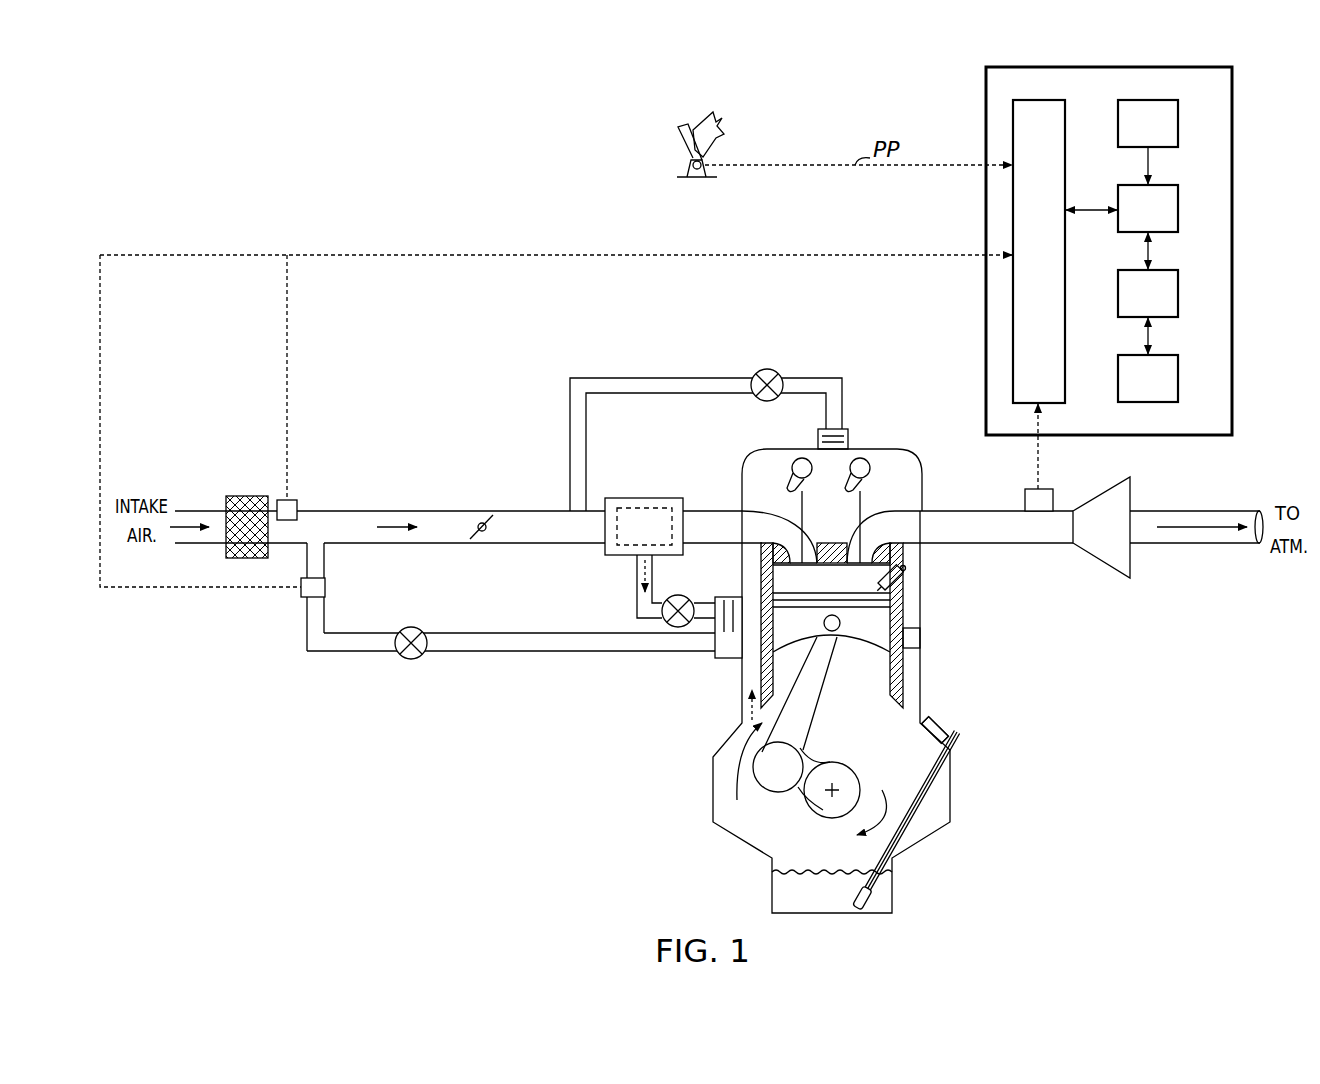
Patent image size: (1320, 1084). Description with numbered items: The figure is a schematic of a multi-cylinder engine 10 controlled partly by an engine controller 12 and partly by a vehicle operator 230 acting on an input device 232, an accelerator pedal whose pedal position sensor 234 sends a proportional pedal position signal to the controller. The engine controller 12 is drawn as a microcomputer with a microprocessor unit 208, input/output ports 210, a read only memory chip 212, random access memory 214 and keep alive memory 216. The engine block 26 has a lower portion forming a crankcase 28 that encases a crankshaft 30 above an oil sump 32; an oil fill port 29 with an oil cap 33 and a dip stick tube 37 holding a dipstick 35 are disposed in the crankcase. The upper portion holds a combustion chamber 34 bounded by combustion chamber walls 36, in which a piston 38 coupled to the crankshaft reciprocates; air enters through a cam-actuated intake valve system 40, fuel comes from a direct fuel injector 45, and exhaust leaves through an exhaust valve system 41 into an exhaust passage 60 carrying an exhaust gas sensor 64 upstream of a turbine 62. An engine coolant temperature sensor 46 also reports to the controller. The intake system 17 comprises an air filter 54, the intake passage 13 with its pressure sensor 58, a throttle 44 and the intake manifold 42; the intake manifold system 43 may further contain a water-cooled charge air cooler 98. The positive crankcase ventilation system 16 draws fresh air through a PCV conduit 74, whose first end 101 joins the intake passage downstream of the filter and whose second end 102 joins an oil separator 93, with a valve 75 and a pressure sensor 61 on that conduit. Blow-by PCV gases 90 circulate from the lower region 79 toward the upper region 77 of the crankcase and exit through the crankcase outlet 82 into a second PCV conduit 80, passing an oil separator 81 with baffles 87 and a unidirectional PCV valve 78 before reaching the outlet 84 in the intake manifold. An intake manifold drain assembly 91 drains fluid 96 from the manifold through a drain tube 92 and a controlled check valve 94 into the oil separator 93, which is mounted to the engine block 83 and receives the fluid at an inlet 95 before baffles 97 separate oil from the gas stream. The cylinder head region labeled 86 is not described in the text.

The engine 10 is at (155, 140).
The engine controller 12 is at (1109, 237).
The intake passage 13 is at (340, 509).
The positive crankcase ventilation system 16 is at (840, 347).
The intake system 17 is at (388, 460).
The engine block 26 is at (932, 857).
The crankcase 28 is at (953, 822).
The oil fill port 29 is at (925, 724).
The crankshaft 30 is at (778, 776).
The oil sump 32 is at (785, 895).
The oil cap 33 is at (937, 717).
The combustion chamber 34 is at (768, 572).
The dipstick 35 is at (960, 733).
The combustion chamber walls 36 is at (905, 610).
The dip stick tube 37 is at (923, 782).
The piston 38 is at (778, 645).
The intake valve system 40 is at (804, 500).
The exhaust valve system 41 is at (862, 490).
The intake manifold 42 is at (659, 502).
The intake manifold system 43 is at (673, 481).
The throttle 44 is at (482, 532).
The fuel injector 45 is at (906, 568).
The engine coolant temperature sensor 46 is at (921, 639).
The air filter 54 is at (243, 495).
The pressure sensor 58 is at (293, 500).
The exhaust passage 60 is at (968, 510).
The pressure sensor 61 is at (301, 590).
The turbine 62 is at (1113, 538).
The exhaust gas sensor 64 is at (1045, 489).
The PCV conduit 74 is at (540, 652).
The valve 75 is at (415, 629).
The upper region of the crankcase 77 is at (915, 579).
The PCV valve 78 is at (779, 372).
The lower region of the crankcase 79 is at (772, 837).
The PCV conduit 80 is at (660, 377).
The oil separator 81 is at (818, 439).
The crankcase outlet 82 is at (841, 440).
The engine block 83 is at (742, 722).
The outlet 84 is at (575, 510).
The cylinder head 86 is at (880, 456).
The baffles 87 is at (826, 425).
The PCV gases 90 is at (743, 705).
The intake manifold drain assembly 91 is at (662, 600).
The drain tube 92 is at (637, 600).
The oil separator 93 is at (716, 650).
The controlled check valve 94 is at (668, 628).
The inlet 95 is at (715, 600).
The fluid 96 is at (638, 575).
The baffles 97 is at (735, 615).
The water-cooled charge air cooler 98 is at (673, 508).
The first end 101 is at (322, 545).
The second end 102 is at (697, 642).
The microprocessor unit 208 is at (1166, 185).
The input/output ports 210 is at (1053, 98).
The read only memory chip 212 is at (1166, 100).
The random access memory 214 is at (1166, 270).
The keep alive memory 216 is at (1166, 355).
The vehicle operator 230 is at (724, 135).
The input device 232 is at (680, 137).
The pedal position sensor 234 is at (699, 180).